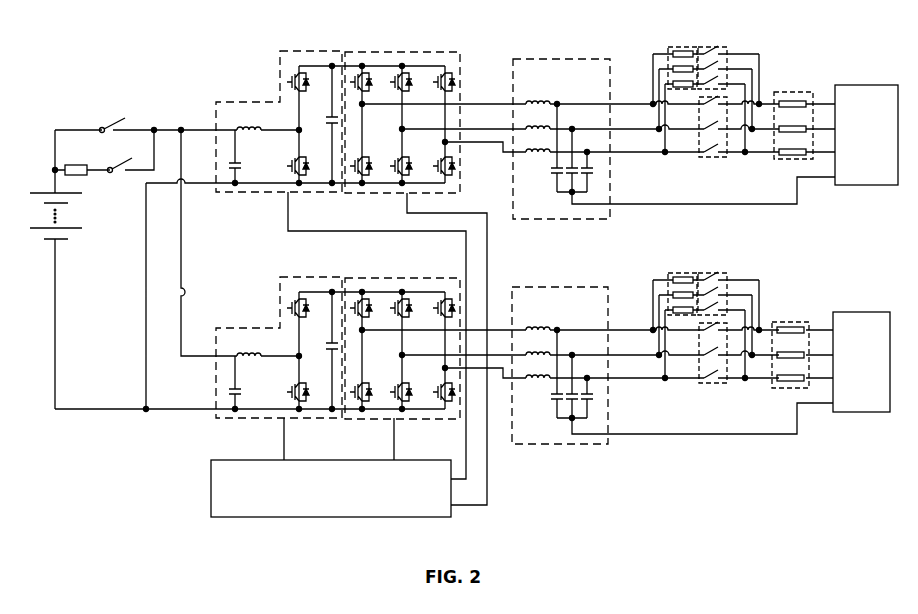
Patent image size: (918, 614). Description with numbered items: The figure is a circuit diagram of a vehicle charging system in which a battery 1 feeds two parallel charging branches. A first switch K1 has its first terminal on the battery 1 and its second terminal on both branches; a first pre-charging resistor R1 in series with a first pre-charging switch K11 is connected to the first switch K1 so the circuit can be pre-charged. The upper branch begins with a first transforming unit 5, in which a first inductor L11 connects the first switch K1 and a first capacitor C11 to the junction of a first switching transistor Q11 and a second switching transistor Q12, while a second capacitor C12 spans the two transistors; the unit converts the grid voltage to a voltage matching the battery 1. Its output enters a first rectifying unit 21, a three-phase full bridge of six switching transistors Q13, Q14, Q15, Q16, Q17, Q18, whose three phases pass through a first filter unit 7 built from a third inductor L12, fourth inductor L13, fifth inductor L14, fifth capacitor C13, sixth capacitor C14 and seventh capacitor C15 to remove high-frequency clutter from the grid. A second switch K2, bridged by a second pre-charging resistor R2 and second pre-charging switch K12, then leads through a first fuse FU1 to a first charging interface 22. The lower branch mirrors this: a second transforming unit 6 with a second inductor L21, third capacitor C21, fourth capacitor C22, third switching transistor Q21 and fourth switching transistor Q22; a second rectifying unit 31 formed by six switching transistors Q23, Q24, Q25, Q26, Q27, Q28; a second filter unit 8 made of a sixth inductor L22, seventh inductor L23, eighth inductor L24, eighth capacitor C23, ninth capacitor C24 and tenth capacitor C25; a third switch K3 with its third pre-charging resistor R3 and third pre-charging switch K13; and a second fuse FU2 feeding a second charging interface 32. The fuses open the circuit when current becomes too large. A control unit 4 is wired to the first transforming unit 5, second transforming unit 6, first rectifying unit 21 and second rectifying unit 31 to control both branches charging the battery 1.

The battery 1 is at (70, 228).
The control unit 4 is at (331, 488).
The first transforming unit 5 is at (283, 51).
The second transforming unit 6 is at (279, 331).
The first filter unit 7 is at (582, 59).
The second filter unit 8 is at (560, 350).
The first rectifying unit 21 is at (395, 52).
The second rectifying unit 31 is at (402, 331).
The first charging interface 22 is at (866, 135).
The second charging interface 32 is at (861, 362).
The first switch K1 is at (113, 117).
The first pre-charging switch K11 is at (122, 157).
The first pre-charging resistor R1 is at (76, 161).
The first inductor L11 is at (249, 119).
The first capacitor C11 is at (247, 156).
The second capacitor C12 is at (319, 124).
The first switching transistor Q11 is at (306, 90).
The second switching transistor Q12 is at (306, 157).
The switching transistor Q13 is at (372, 79).
The switching transistor Q14 is at (368, 157).
The switching transistor Q15 is at (395, 88).
The switching transistor Q16 is at (396, 171).
The switching transistor Q17 is at (437, 88).
The switching transistor Q18 is at (437, 158).
The third inductor L12 is at (538, 94).
The fourth inductor L13 is at (538, 119).
The fifth inductor L14 is at (538, 142).
The fifth capacitor C13 is at (547, 148).
The sixth capacitor C14 is at (570, 160).
The seventh capacitor C15 is at (596, 172).
The second pre-charging resistor R2 is at (673, 47).
The second pre-charging switch K12 is at (709, 47).
The second switch K2 is at (712, 157).
The first fuse FU1 is at (790, 92).
The second inductor L21 is at (249, 345).
The third capacitor C21 is at (247, 382).
The fourth capacitor C22 is at (319, 350).
The third switching transistor Q21 is at (306, 316).
The fourth switching transistor Q22 is at (306, 383).
The switching transistor Q23 is at (372, 305).
The switching transistor Q24 is at (368, 383).
The switching transistor Q25 is at (395, 314).
The switching transistor Q26 is at (396, 397).
The switching transistor Q27 is at (437, 314).
The switching transistor Q28 is at (437, 384).
The sixth inductor L22 is at (538, 320).
The seventh inductor L23 is at (538, 345).
The eighth inductor L24 is at (538, 368).
The eighth capacitor C23 is at (552, 397).
The ninth capacitor C24 is at (566, 386).
The tenth capacitor C25 is at (592, 398).
The third pre-charging resistor R3 is at (689, 279).
The third pre-charging switch K13 is at (727, 278).
The third switch K3 is at (701, 365).
The second fuse FU2 is at (799, 338).